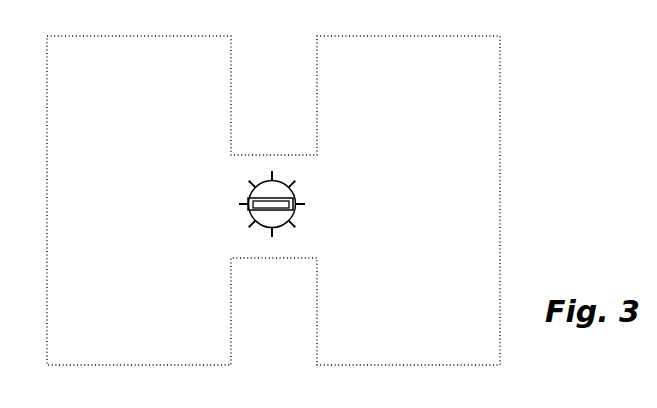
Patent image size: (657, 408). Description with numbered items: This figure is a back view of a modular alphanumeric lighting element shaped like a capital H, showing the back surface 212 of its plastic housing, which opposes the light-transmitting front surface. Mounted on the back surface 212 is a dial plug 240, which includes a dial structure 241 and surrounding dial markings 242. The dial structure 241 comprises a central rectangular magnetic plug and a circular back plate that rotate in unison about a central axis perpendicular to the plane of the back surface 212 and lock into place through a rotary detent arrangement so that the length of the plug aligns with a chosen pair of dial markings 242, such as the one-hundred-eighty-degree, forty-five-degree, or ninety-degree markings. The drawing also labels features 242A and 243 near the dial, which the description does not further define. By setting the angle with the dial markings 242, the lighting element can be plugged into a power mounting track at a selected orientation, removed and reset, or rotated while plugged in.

The back surface 212 is at (482, 138).
The dial plug 240 is at (218, 155).
The dial structure 241 is at (297, 189).
The dial markings 242 is at (247, 210).
The indicator window 242A is at (248, 202).
The lower 45-degree position marker 243 is at (305, 230).